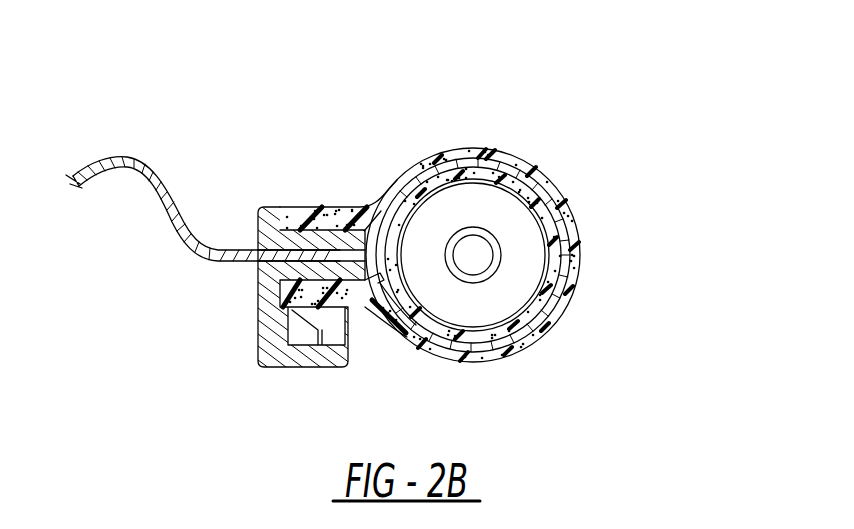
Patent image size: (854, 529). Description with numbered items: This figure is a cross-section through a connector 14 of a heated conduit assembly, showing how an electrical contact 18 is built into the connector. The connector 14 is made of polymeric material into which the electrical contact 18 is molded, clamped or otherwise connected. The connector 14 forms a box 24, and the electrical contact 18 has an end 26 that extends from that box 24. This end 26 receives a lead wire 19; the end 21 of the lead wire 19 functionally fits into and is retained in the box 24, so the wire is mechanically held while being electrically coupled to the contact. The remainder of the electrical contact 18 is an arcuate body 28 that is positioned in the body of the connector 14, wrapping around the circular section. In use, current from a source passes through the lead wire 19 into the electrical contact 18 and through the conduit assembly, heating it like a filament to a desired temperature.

The connector 14 is at (640, 280).
The electrical contact 18 is at (292, 305).
The lead wire 19 is at (127, 156).
The end of the lead wire 21 is at (268, 222).
The box 24 is at (290, 205).
The end of the electrical contact 26 is at (330, 262).
The arcuate body 28 is at (538, 338).